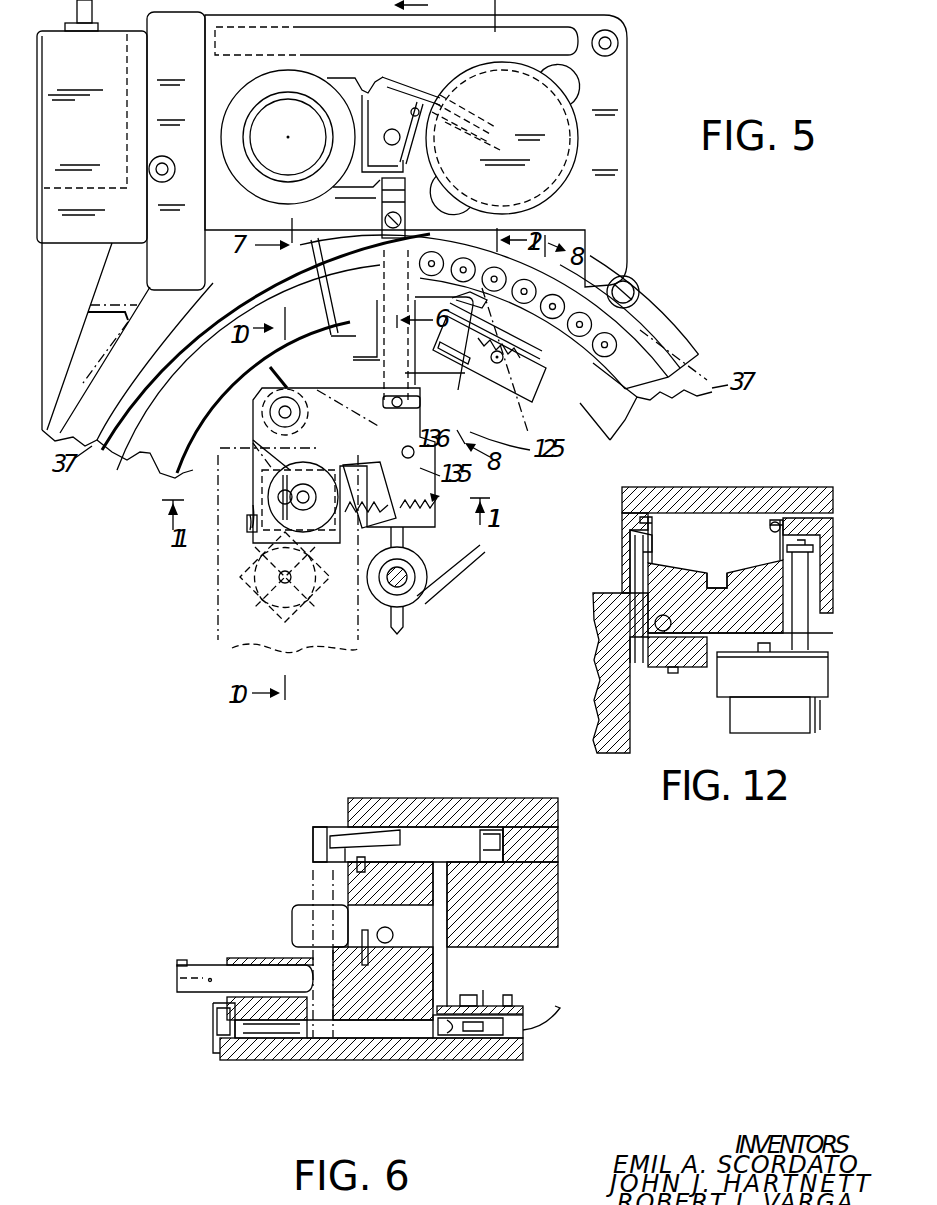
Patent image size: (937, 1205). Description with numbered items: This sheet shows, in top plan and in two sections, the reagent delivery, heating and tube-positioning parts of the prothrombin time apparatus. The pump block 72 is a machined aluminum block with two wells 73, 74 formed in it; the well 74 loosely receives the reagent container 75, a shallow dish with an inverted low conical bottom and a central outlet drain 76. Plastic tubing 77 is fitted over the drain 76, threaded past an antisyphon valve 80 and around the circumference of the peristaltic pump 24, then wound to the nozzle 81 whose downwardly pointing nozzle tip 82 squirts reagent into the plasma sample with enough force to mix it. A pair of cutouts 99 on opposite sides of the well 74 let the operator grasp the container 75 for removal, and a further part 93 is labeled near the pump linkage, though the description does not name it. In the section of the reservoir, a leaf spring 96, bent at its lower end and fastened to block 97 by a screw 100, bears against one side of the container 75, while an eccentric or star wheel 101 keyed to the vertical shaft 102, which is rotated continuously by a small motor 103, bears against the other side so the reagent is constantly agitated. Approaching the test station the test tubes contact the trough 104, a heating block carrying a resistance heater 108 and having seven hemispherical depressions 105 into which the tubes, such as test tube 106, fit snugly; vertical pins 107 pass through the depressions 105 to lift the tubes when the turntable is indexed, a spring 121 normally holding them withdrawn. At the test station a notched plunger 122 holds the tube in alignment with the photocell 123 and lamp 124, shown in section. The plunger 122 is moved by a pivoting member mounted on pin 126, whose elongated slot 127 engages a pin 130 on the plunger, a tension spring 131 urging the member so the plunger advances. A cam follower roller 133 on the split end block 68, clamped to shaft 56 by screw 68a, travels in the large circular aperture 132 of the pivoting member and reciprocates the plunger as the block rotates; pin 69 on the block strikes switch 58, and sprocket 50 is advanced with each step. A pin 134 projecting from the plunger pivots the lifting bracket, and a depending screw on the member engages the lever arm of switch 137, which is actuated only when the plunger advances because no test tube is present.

In FIG. 5, the peristaltic pump 24 is at (283, 119).
In FIG. 5, the sprocket 50 is at (262, 622).
In FIG. 5, the shaft 56 is at (280, 496).
In FIG. 5, the switch 58 is at (400, 480).
In FIG. 5, the split end block 68 is at (250, 510).
In FIG. 5, the screw 68a is at (252, 525).
In FIG. 5, the pin 69 is at (327, 465).
In FIG. 5, the pump block 72 is at (570, 200).
In FIG. 6, the pump block 72 is at (560, 887).
In FIG. 5, the well 73 is at (318, 78).
In FIG. 5, the well 74 is at (504, 62).
In FIG. 12, the well 74 is at (652, 522).
In FIG. 12, the reagent container 75 is at (777, 522).
In FIG. 12, the outlet drain 76 is at (697, 583).
In FIG. 5, the plastic tubing 77 is at (410, 84).
In FIG. 5, the antisyphon valve 80 is at (368, 98).
In FIG. 6, the nozzle 81 is at (342, 828).
In FIG. 6, the nozzle tip 82 is at (320, 858).
In FIG. 5, the pawl 93 is at (420, 136).
In FIG. 12, the leaf spring 96 is at (642, 570).
In FIG. 12, the block 97 is at (713, 667).
In FIG. 5, the cutouts 99 is at (571, 95).
In FIG. 12, the screw 100 is at (673, 675).
In FIG. 12, the star wheel 101 is at (813, 550).
In FIG. 12, the vertical shaft 102 is at (810, 643).
In FIG. 12, the motor 103 is at (817, 687).
In FIG. 5, the trough 104 is at (598, 350).
In FIG. 5, the hemispherical depressions 105 is at (620, 266).
In FIG. 6, the test tube 106 is at (313, 868).
In FIG. 5, the vertical pins 107 is at (641, 298).
In FIG. 6, the resistance heater 108 is at (380, 933).
In FIG. 5, the spring 121 is at (522, 372).
In FIG. 5, the notched plunger 122 is at (383, 322).
In FIG. 6, the notched plunger 122 is at (213, 970).
In FIG. 6, the photocell 123 is at (292, 1027).
In FIG. 6, the lamp 124 is at (462, 1037).
In FIG. 5, the pin 126 is at (270, 412).
In FIG. 5, the elongated slot 127 is at (508, 400).
In FIG. 5, the pin 130 is at (418, 406).
In FIG. 6, the pin 130 is at (176, 962).
In FIG. 5, the tension spring 131 is at (414, 540).
In FIG. 5, the circular aperture 132 is at (258, 503).
In FIG. 5, the cam follower roller 133 is at (253, 443).
In FIG. 5, the pin 134 is at (455, 322).
In FIG. 5, the switch 137 is at (345, 370).